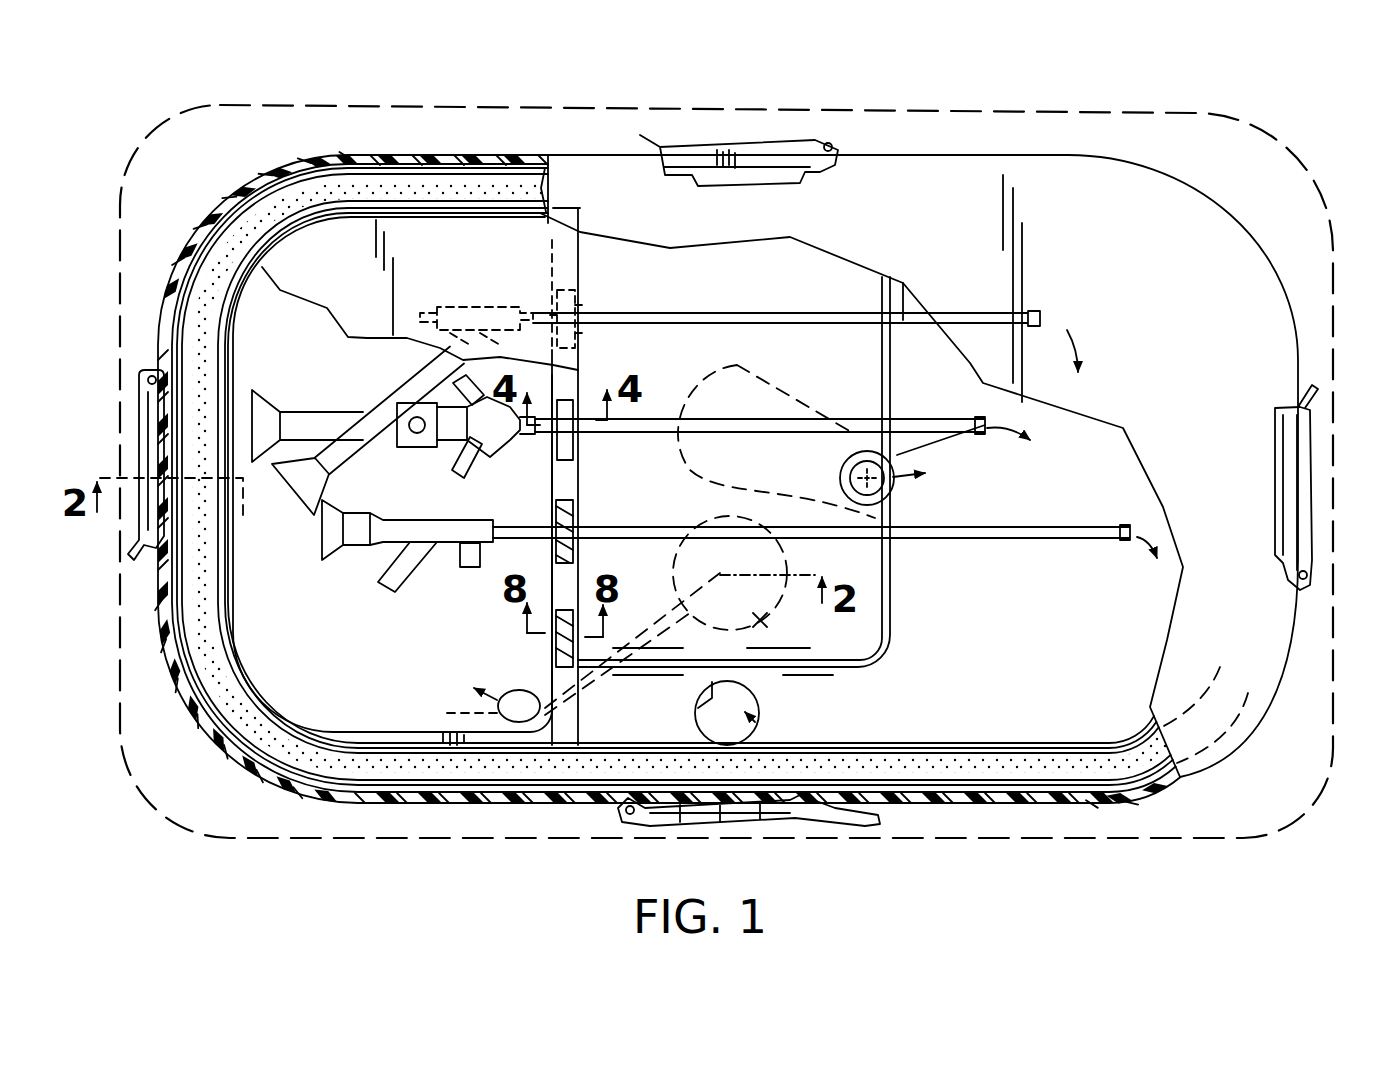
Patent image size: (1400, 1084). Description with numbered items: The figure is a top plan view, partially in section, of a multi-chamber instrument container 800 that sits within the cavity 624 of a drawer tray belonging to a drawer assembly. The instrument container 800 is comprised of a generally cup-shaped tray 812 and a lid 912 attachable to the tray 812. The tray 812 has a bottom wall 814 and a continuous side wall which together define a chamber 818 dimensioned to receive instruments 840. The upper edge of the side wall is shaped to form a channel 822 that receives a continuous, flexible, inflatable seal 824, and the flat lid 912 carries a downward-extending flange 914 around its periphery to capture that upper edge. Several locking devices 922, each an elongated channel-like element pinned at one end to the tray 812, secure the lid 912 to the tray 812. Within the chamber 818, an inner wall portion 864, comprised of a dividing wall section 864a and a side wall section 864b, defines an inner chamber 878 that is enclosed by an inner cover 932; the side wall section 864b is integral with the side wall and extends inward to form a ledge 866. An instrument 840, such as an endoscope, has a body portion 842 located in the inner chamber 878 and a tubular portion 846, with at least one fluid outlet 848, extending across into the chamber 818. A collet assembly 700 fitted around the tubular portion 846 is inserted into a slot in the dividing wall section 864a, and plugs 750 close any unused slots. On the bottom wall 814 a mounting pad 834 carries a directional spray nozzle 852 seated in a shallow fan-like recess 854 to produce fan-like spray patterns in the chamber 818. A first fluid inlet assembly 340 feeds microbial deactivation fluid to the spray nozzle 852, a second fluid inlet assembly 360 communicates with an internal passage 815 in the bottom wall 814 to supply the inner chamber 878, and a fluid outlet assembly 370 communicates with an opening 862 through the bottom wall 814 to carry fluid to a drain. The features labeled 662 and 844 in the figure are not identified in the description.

The sterilization container 662 is at (1277, 127).
The cavity 624 is at (1007, 132).
The instrument container 800 is at (1140, 150).
The lid 912 is at (1200, 247).
The downward-extending flange 914 is at (1298, 352).
The seal 824 is at (397, 186).
The channel 822 is at (437, 178).
The inner cover 932 is at (340, 240).
The tray 812 is at (273, 654).
The bottom wall 814 is at (343, 683).
The ledge 866 is at (387, 740).
The chamber 818 is at (1001, 648).
The inner wall portion 864 is at (433, 731).
The dividing wall section 864a is at (580, 473).
The side wall section 864b is at (232, 580).
The inner chamber 878 is at (398, 668).
The internal passage 815 is at (521, 723).
The mounting pad 834 is at (875, 636).
The collet assembly 700 is at (578, 287).
The plug 750 is at (548, 647).
The instrument 840 is at (297, 407).
The body portion 842 is at (470, 433).
The tubing connector 844 is at (392, 314).
The tubular portion 846 is at (647, 420).
The fluid outlet 848 is at (1042, 318).
The first fluid inlet assembly 340 is at (752, 366).
The directional spray nozzle 852 is at (865, 458).
The fan-like recess 854 is at (888, 512).
The second fluid inlet assembly 360 is at (765, 618).
The opening 862 is at (713, 697).
The fluid outlet assembly 370 is at (752, 732).
The locking device 922 is at (770, 146).